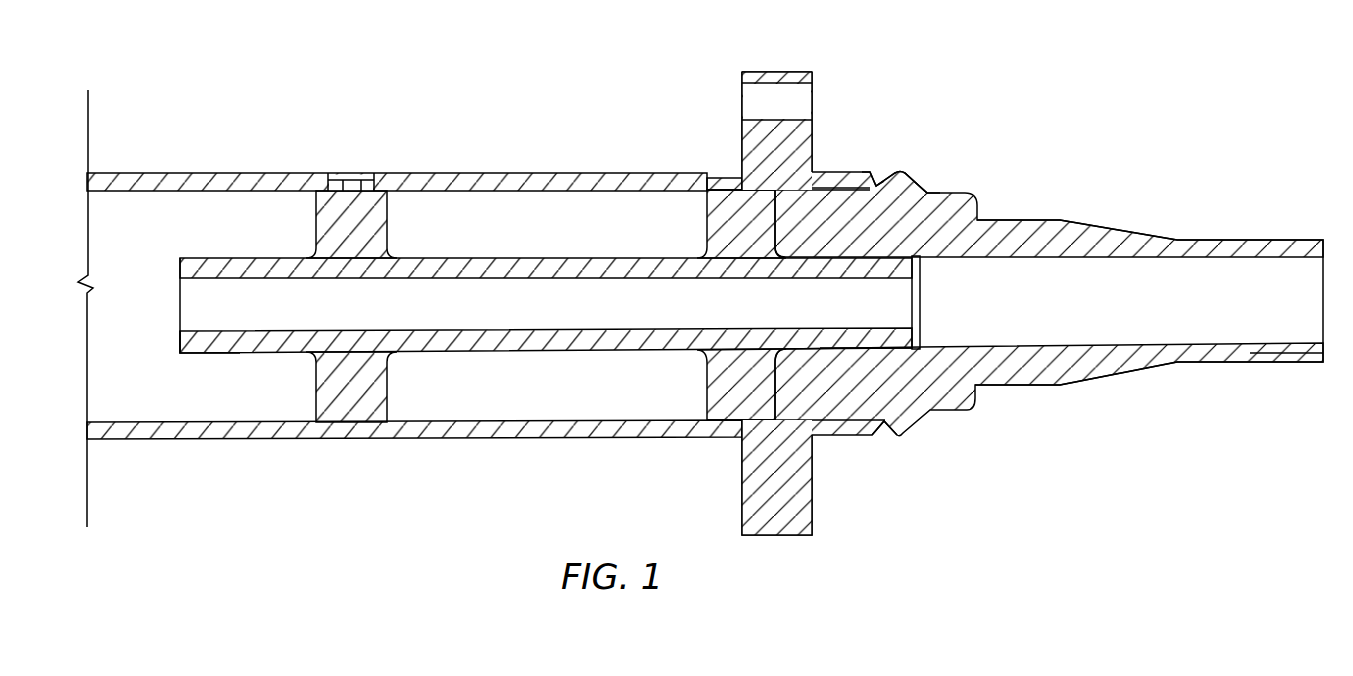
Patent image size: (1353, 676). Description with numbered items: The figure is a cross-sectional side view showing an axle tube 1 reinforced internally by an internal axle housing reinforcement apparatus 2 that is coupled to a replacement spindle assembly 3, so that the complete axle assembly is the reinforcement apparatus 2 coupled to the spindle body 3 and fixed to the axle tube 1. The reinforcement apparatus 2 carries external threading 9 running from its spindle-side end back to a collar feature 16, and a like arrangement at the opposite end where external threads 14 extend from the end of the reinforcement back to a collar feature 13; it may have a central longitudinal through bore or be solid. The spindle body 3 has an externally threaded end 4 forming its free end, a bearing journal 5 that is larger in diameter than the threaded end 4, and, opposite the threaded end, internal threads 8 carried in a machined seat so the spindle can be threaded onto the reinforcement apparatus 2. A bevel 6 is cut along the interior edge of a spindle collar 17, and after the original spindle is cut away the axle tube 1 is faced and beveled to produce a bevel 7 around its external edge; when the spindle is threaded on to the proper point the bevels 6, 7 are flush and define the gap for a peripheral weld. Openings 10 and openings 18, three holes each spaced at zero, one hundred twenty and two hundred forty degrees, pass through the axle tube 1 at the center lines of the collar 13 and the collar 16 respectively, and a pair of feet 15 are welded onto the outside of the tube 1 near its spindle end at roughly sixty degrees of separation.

The axle tube 1 is at (192, 172).
The internal axle housing reinforcement apparatus 2 is at (510, 257).
The replacement spindle assembly 3 is at (967, 193).
The externally threaded end 4 is at (1292, 238).
The bearing journal 5 is at (1040, 220).
The bevel 6 is at (891, 172).
The bevel 7 is at (875, 185).
The internal threads 8 is at (880, 350).
The external threading 9 is at (852, 350).
The openings 10 is at (350, 177).
The collar feature 13 is at (340, 213).
The external threads 14 is at (237, 352).
The feet 15 is at (783, 73).
The collar feature 16 is at (733, 223).
The spindle collar 17 is at (917, 186).
The openings 18 is at (725, 180).